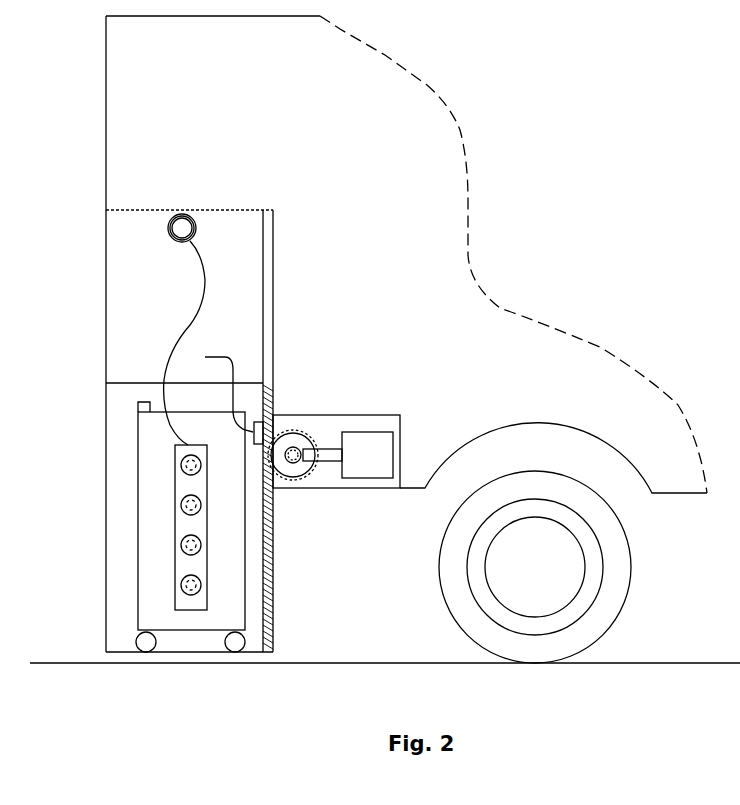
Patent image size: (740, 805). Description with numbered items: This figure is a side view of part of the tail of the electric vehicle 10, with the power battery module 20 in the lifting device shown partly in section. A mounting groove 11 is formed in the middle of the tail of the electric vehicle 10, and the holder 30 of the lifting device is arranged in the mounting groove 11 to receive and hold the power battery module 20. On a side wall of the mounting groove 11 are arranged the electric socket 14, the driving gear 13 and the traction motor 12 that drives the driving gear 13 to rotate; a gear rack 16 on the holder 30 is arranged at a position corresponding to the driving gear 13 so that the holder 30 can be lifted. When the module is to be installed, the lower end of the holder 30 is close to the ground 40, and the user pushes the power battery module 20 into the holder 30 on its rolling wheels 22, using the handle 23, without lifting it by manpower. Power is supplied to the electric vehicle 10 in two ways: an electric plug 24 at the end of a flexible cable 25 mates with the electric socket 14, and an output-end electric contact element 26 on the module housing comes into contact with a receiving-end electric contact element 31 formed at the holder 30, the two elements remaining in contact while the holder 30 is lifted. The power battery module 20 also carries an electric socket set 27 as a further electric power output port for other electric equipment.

The electric vehicle 10 is at (428, 83).
The mounting groove 11 is at (255, 235).
The traction motor 12 is at (383, 443).
The driving gear 13 is at (308, 428).
The electric socket 14 is at (196, 230).
The gear rack 16 is at (273, 596).
The power battery module 20 is at (138, 535).
The rolling wheels 22 is at (245, 642).
The handle 23 is at (138, 405).
The electric plug 24 is at (172, 232).
The flexible cable 25 is at (192, 322).
The output-end electric contact element 26 is at (220, 393).
The electric socket set 27 is at (207, 578).
The holder 30 is at (135, 383).
The receiving-end electric contact element 31 is at (272, 408).
The ground 40 is at (100, 663).